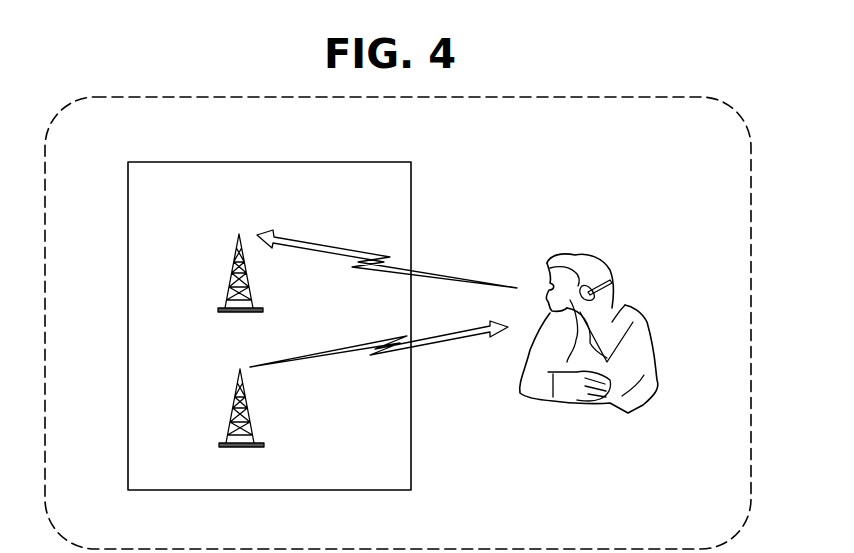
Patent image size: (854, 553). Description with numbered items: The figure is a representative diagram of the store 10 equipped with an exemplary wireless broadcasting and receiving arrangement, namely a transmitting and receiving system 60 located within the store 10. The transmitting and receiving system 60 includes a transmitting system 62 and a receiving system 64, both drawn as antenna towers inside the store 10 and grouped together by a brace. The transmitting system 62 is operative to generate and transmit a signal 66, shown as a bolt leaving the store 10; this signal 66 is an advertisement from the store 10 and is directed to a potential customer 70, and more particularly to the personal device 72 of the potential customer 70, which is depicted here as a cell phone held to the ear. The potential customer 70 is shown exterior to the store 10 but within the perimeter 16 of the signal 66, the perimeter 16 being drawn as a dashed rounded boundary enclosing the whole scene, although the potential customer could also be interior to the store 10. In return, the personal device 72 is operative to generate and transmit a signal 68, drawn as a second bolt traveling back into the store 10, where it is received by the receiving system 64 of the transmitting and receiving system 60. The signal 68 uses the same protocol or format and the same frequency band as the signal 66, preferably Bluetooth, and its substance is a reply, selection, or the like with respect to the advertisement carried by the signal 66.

The perimeter 16 is at (173, 97).
The store 10 is at (280, 162).
The transmitting and receiving system 60 is at (230, 338).
The receiving system 64 is at (252, 272).
The transmitting system 62 is at (267, 408).
The signal 68 is at (440, 270).
The signal 66 is at (442, 343).
The potential customer 70 is at (635, 312).
The personal device 72 is at (592, 278).